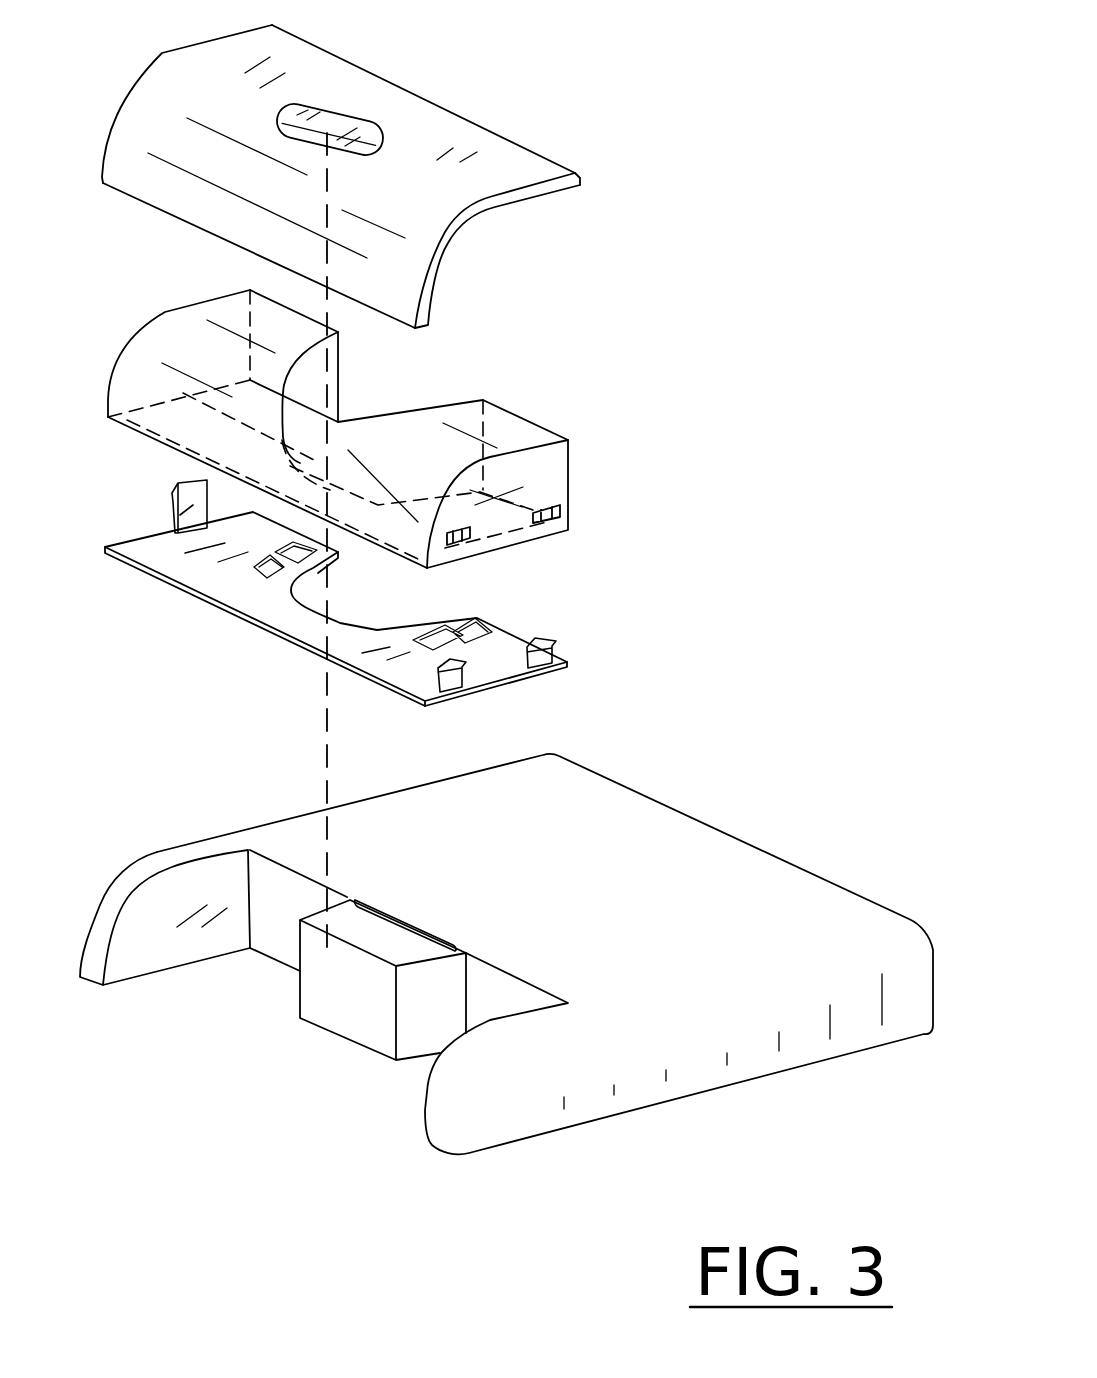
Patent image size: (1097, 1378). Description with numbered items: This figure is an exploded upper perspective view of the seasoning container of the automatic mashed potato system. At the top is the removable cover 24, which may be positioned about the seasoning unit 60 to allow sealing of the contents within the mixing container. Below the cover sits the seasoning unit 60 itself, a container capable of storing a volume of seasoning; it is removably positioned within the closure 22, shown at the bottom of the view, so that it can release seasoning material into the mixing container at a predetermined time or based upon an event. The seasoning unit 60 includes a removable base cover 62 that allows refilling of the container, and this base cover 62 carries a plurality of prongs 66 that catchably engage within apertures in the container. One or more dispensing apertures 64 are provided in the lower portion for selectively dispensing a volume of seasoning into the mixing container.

The closure 22 is at (663, 845).
The removable cover 24 is at (447, 153).
The seasoning unit 60 is at (533, 408).
The removable base cover 62 is at (543, 670).
The dispensing apertures 64 is at (488, 632).
The prongs 66 is at (173, 525).